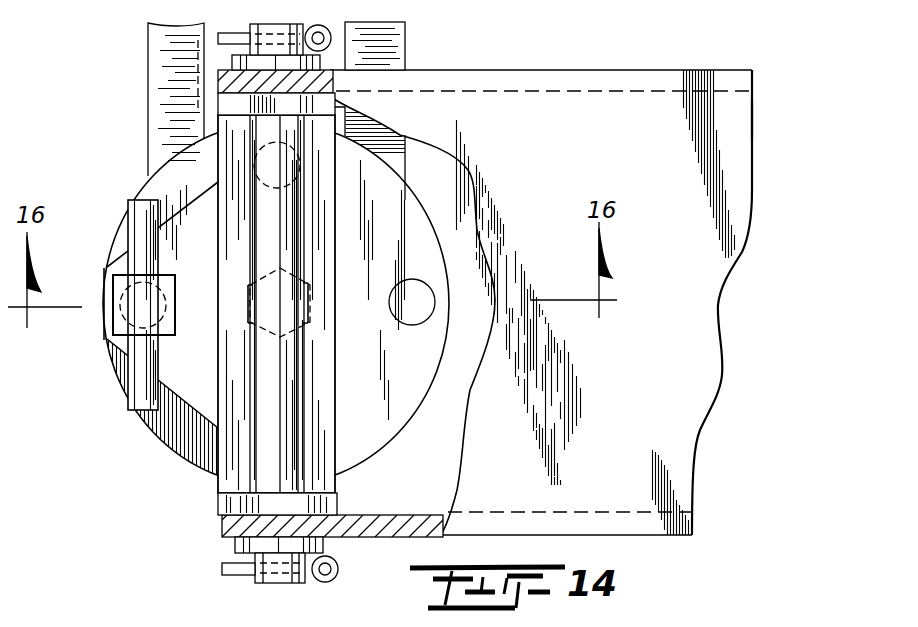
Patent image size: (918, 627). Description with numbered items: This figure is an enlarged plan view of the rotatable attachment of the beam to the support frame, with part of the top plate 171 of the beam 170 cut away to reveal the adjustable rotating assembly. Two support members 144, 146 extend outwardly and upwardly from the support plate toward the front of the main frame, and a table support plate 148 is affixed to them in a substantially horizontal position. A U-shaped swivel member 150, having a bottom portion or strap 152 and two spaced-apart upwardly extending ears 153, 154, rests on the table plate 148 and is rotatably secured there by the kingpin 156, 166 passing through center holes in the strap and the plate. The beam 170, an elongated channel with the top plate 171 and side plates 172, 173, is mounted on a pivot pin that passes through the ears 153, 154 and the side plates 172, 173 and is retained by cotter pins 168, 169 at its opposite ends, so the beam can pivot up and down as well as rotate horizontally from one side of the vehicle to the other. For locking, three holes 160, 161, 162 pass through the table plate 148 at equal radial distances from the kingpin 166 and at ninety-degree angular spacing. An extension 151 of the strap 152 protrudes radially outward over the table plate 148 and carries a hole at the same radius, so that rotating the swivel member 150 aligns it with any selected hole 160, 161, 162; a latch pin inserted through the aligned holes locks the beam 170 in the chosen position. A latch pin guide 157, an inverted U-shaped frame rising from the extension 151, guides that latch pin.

The support member 144 is at (151, 79).
The support member 146 is at (407, 41).
The table support plate 148 is at (172, 447).
The U-shaped swivel member 150 is at (336, 417).
The extension 151 is at (118, 350).
The bottom portion 152 is at (219, 478).
The ear 153 is at (320, 493).
The ear 154 is at (233, 117).
The kingpin 156 is at (128, 392).
The latch pin guide 157 is at (113, 293).
The hole 160 is at (122, 316).
The hole 161 is at (292, 182).
The hole 162 is at (405, 280).
The kingpin 166 is at (310, 308).
The cotter pin 168 is at (236, 578).
The cotter pin 169 is at (227, 33).
The support arm or beam 170 is at (626, 141).
The top plate 171 is at (737, 246).
The side plate 172 is at (335, 517).
The side plate 173 is at (262, 108).